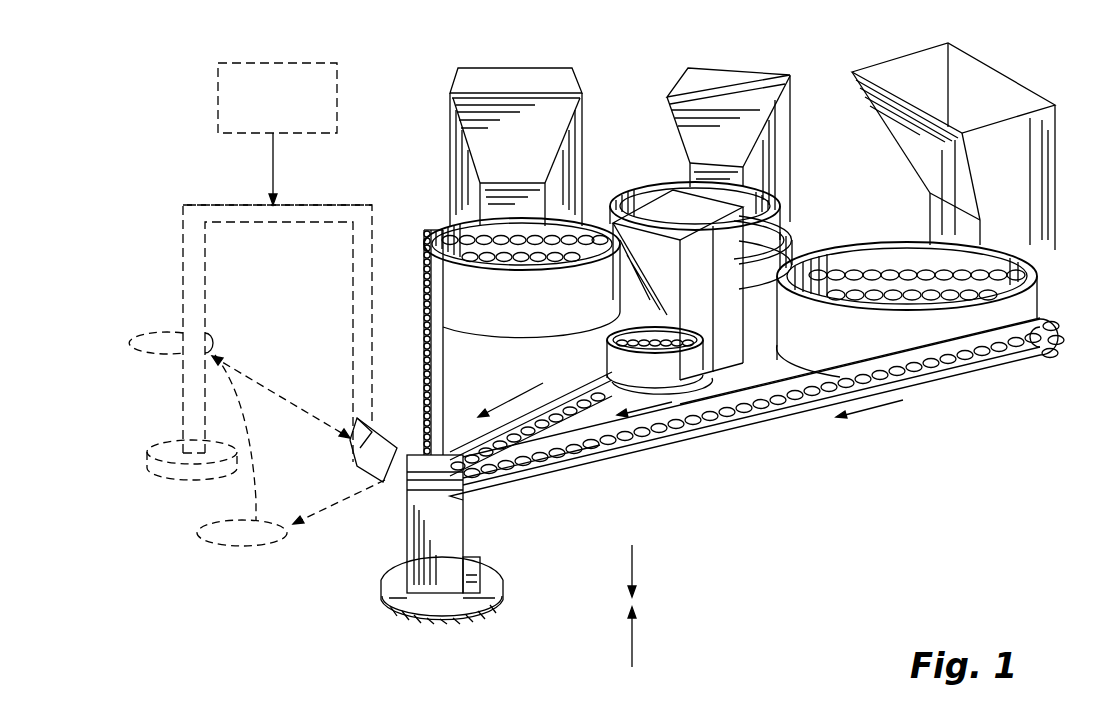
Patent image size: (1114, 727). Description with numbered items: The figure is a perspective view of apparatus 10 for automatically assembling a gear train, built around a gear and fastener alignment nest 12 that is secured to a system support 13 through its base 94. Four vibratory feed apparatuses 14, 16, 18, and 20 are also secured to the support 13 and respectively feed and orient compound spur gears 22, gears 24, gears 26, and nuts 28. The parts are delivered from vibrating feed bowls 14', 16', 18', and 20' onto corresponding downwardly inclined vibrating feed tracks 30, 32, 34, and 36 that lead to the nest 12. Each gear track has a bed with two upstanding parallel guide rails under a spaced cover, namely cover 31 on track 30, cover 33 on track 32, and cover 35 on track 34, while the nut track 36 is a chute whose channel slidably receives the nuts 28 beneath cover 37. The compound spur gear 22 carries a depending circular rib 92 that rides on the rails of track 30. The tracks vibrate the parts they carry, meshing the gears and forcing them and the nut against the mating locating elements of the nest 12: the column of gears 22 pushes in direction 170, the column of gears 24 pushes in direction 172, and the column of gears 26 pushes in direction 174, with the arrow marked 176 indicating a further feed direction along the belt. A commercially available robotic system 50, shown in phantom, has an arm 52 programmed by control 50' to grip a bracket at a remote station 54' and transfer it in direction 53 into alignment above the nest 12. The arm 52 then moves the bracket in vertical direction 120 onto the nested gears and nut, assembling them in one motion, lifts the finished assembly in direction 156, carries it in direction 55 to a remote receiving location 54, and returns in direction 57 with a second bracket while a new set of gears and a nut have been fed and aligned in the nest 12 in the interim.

The apparatus 10 is at (292, 322).
The gear and fastener alignment nest 12 is at (390, 583).
The system support 13 is at (448, 614).
The vibratory feed apparatus 14 is at (491, 147).
The vibrating feed bowl 14' is at (503, 269).
The vibratory feed apparatus 16 is at (712, 111).
The vibrating feed bowl 16' is at (701, 211).
The vibratory feed apparatus 18 is at (970, 131).
The vibrating feed bowl 18' is at (907, 286).
The vibratory feed apparatus 20 is at (692, 290).
The vibrating feed bowl 20' is at (628, 360).
The compound spur gear 22 is at (424, 277).
The gear 24 is at (563, 420).
The gear 26 is at (1056, 329).
The nut 28 is at (533, 467).
The feed track 30 is at (448, 305).
The cover 31 is at (443, 366).
The feed track 32 is at (465, 447).
The cover 33 is at (547, 391).
The feed track 34 is at (805, 407).
The cover 35 is at (478, 472).
The feed track 36 is at (600, 415).
The cover 37 is at (720, 403).
The robotic system 50 is at (277, 308).
The control 50' is at (278, 108).
The arm 52 is at (355, 459).
The direction 53 is at (283, 397).
The remote receiving location 54 is at (242, 553).
The remote station 54' is at (183, 383).
The direction 55 is at (331, 510).
The direction 57 is at (254, 500).
The circular rib 92 is at (407, 545).
The base 94 is at (488, 573).
The vertical direction 120 is at (634, 565).
The direction 156 is at (634, 640).
The direction 170 is at (408, 424).
The direction 172 is at (510, 386).
The direction 174 is at (890, 411).
The belt direction 176 is at (663, 407).